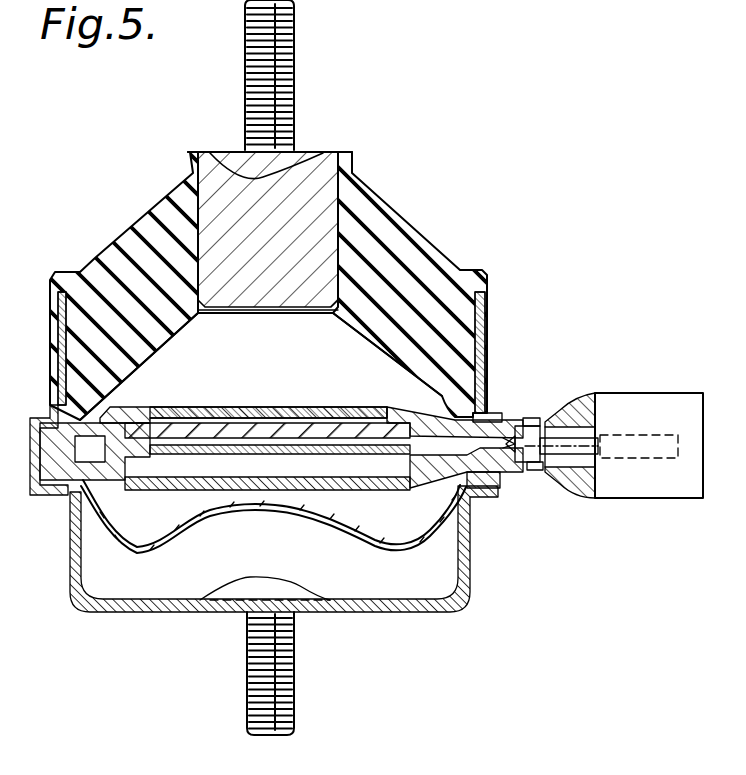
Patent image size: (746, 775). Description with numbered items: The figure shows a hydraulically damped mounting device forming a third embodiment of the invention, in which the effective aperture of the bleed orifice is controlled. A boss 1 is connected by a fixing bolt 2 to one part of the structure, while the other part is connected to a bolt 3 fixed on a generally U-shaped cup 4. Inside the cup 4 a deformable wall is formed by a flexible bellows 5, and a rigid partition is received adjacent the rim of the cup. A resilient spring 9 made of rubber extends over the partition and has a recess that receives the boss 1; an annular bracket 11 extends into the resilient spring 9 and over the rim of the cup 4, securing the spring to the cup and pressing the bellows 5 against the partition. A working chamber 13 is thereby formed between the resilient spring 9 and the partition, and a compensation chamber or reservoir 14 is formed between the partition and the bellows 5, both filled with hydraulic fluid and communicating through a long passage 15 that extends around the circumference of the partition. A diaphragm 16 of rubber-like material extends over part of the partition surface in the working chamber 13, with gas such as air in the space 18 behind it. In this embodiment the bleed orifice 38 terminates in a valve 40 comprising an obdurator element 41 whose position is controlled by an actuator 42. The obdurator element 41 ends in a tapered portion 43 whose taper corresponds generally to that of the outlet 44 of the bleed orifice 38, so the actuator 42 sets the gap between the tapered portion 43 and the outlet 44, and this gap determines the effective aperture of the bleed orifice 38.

The boss 1 is at (313, 170).
The fixing bolt 2 is at (293, 90).
The bolt 3 is at (293, 693).
The cup 4 is at (160, 607).
The flexible bellows 5 is at (100, 532).
The resilient spring 9 is at (397, 240).
The annular bracket 11 is at (58, 333).
The working chamber 13 is at (290, 370).
The compensation chamber or reservoir 14 is at (128, 535).
The passage 15 is at (85, 418).
The diaphragm 16 is at (305, 420).
The space 18 is at (336, 470).
The bleed orifice 38 is at (495, 490).
The valve 40 is at (552, 342).
The obdurator element 41 is at (563, 470).
The actuator 42 is at (677, 398).
The tapered portion 43 is at (530, 462).
The outlet 44 is at (516, 424).